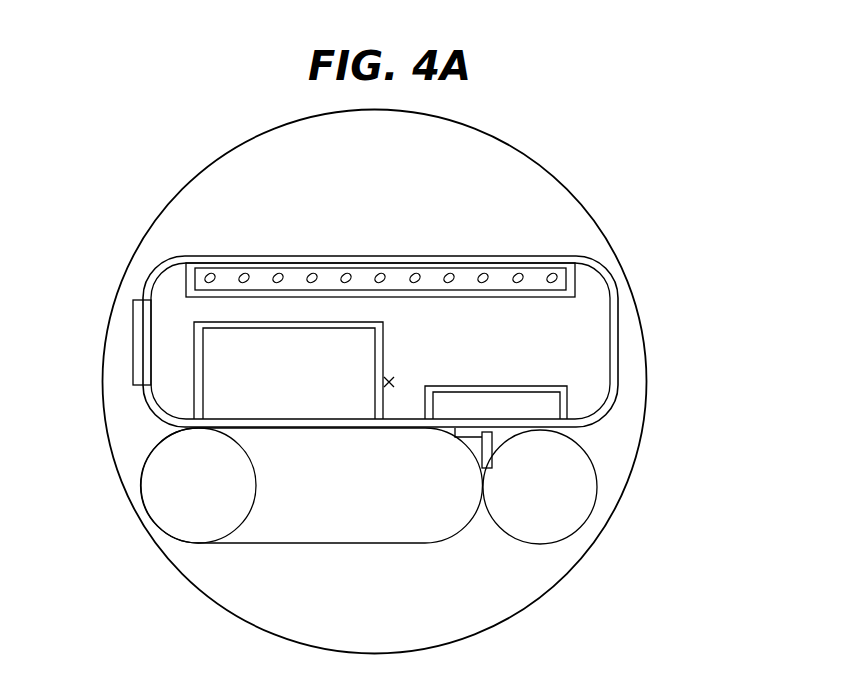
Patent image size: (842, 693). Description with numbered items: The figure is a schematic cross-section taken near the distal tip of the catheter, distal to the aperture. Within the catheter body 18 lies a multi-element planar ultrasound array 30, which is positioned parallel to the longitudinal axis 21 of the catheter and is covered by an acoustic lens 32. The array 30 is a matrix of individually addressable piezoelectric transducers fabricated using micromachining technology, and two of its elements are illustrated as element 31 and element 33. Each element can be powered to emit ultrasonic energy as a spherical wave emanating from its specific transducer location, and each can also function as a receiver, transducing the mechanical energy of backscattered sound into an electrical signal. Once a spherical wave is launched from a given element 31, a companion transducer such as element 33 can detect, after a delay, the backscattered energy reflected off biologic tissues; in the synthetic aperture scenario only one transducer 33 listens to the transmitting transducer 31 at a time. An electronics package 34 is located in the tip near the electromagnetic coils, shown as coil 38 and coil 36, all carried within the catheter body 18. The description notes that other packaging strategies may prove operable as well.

The catheter body 18 is at (512, 144).
The longitudinal axis 21 is at (389, 382).
The multi-element planar ultrasound array 30 is at (578, 256).
The transducer element 31 is at (520, 266).
The acoustic lens 32 is at (246, 247).
The transducer element 33 is at (550, 266).
The electronics package 34 is at (499, 408).
The coil 36 is at (180, 494).
The coil 38 is at (554, 509).